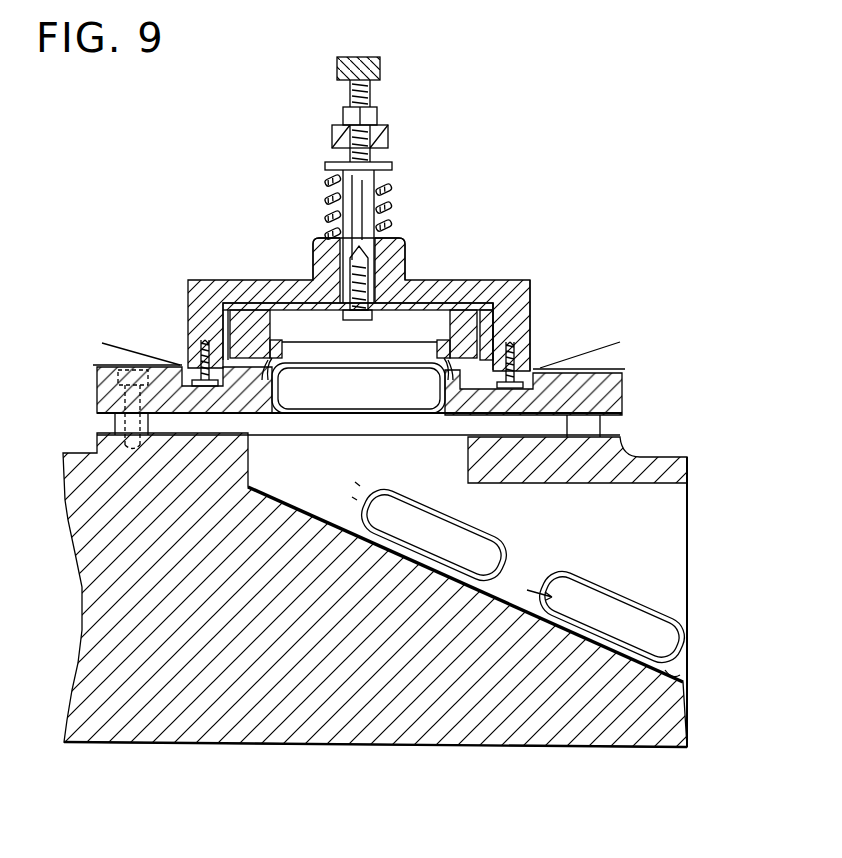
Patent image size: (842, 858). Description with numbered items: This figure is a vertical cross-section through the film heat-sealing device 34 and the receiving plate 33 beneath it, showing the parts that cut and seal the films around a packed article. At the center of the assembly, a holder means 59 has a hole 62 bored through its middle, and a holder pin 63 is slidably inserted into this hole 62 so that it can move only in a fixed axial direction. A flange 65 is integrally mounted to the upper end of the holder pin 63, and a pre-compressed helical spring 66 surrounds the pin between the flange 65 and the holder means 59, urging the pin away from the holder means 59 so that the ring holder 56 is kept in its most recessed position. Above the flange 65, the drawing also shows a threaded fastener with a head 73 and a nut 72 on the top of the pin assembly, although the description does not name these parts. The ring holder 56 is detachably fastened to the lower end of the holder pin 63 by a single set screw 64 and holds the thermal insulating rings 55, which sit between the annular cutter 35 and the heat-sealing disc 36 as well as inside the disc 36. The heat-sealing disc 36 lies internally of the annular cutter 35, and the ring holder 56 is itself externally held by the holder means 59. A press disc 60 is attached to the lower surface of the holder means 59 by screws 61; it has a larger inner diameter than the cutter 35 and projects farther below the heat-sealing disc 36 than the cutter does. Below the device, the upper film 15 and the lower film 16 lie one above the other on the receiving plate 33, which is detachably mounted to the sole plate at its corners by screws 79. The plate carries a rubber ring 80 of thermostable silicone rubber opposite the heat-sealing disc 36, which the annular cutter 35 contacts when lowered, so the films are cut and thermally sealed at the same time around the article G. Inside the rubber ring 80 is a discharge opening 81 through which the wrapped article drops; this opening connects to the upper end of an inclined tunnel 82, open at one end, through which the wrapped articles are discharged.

The film heat-sealing device 34 is at (488, 212).
The bolt head 73 is at (380, 70).
The lock nut 72 is at (380, 135).
The flange 65 is at (392, 165).
The holder pin 63 is at (352, 192).
The helical spring 66 is at (392, 190).
The hole 62 is at (400, 245).
The set screw 64 is at (372, 282).
The holder means 59 is at (255, 305).
The annular cutter 35 is at (218, 312).
The heat-sealing disc 36 is at (246, 322).
The thermal insulating rings 55 is at (495, 305).
The ring holder 56 is at (496, 306).
The press disc 60 is at (196, 368).
The screws 61 is at (533, 348).
The upper film 15 is at (118, 350).
The lower film 16 is at (95, 364).
The receiving plate 33 is at (620, 405).
The screws 79 is at (112, 402).
The article G is at (373, 400).
The discharge opening 81 is at (285, 420).
The rubber ring 80 is at (450, 414).
The inclined tunnel 82 is at (528, 593).